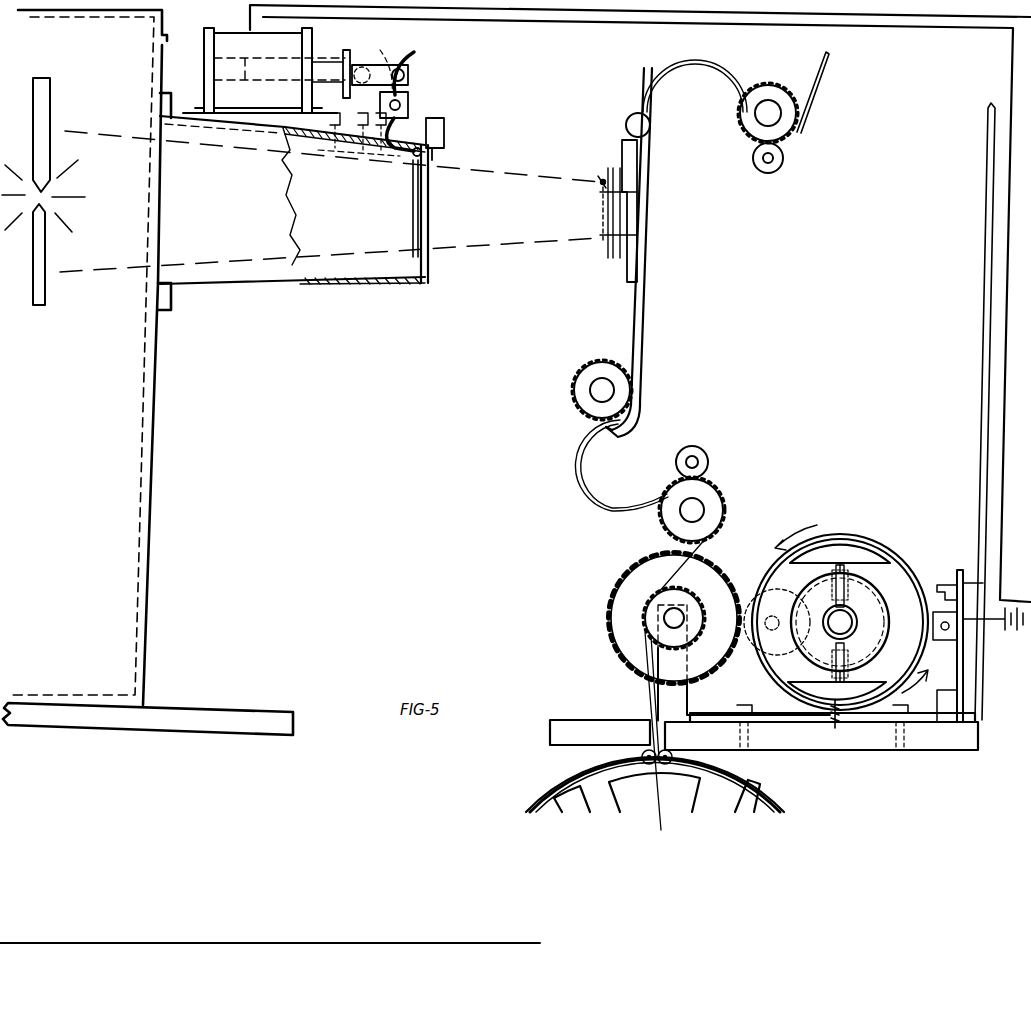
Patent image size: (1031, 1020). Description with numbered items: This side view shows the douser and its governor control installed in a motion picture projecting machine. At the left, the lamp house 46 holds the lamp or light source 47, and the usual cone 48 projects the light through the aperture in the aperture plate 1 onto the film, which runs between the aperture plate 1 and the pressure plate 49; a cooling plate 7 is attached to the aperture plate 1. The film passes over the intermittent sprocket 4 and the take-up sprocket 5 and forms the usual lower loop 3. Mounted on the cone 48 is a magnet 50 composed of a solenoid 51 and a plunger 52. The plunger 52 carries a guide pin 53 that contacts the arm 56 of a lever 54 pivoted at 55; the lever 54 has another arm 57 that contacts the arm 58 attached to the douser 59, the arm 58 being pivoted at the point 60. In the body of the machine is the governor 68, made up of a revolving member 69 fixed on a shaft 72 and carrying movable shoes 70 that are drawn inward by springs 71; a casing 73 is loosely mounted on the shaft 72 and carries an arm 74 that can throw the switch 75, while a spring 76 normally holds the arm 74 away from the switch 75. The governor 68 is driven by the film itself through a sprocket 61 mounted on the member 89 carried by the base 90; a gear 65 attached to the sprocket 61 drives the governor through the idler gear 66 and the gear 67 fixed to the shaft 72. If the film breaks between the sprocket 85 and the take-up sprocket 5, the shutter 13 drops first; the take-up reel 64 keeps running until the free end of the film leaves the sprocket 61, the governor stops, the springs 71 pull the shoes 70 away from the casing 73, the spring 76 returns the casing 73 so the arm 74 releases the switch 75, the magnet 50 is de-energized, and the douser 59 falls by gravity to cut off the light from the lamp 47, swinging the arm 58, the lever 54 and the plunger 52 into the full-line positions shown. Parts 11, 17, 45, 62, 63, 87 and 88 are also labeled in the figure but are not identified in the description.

The aperture plate 1 is at (626, 162).
The lower loop 3 is at (578, 476).
The intermittent sprocket 4 is at (574, 388).
The take-up sprocket 5 is at (712, 497).
The cooling plate 7 is at (612, 250).
The aperture plate 11 is at (612, 236).
The shutter 13 is at (597, 182).
The lens 17 is at (600, 177).
The guide roller 45 is at (626, 125).
The lamp house 46 is at (128, 375).
The lamp 47 is at (50, 193).
The cone 48 is at (300, 268).
The pressure plate 49 is at (650, 300).
The magnet 50 is at (225, 33).
The solenoid 51 is at (257, 43).
The plunger 52 is at (375, 66).
The guide pin 53 is at (410, 76).
The lever 54 is at (413, 55).
The pivot 55 is at (410, 108).
The arm 56 is at (400, 55).
The arm 57 is at (383, 118).
The arm 58 is at (408, 128).
The douser 59 is at (430, 234).
The pivot point 60 is at (425, 152).
The sprocket 61 is at (680, 597).
The film strip 62 is at (650, 723).
The pinch rollers 63 is at (640, 757).
The take-up reel 64 is at (750, 788).
The gear 65 is at (632, 583).
The idler gear 66 is at (748, 598).
The gear 67 is at (867, 615).
The governor 68 is at (891, 572).
The revolving member 69 is at (877, 627).
The movable shoes 70 is at (828, 555).
The springs 71 is at (845, 585).
The shaft 72 is at (840, 622).
The casing 73 is at (913, 578).
The arm 74 is at (978, 626).
The switch 75 is at (948, 585).
The spring 76 is at (837, 727).
The sprocket 85 is at (768, 128).
The guide arm 87 is at (820, 86).
The film loop 88 is at (697, 58).
The member 89 is at (690, 705).
The base 90 is at (940, 748).